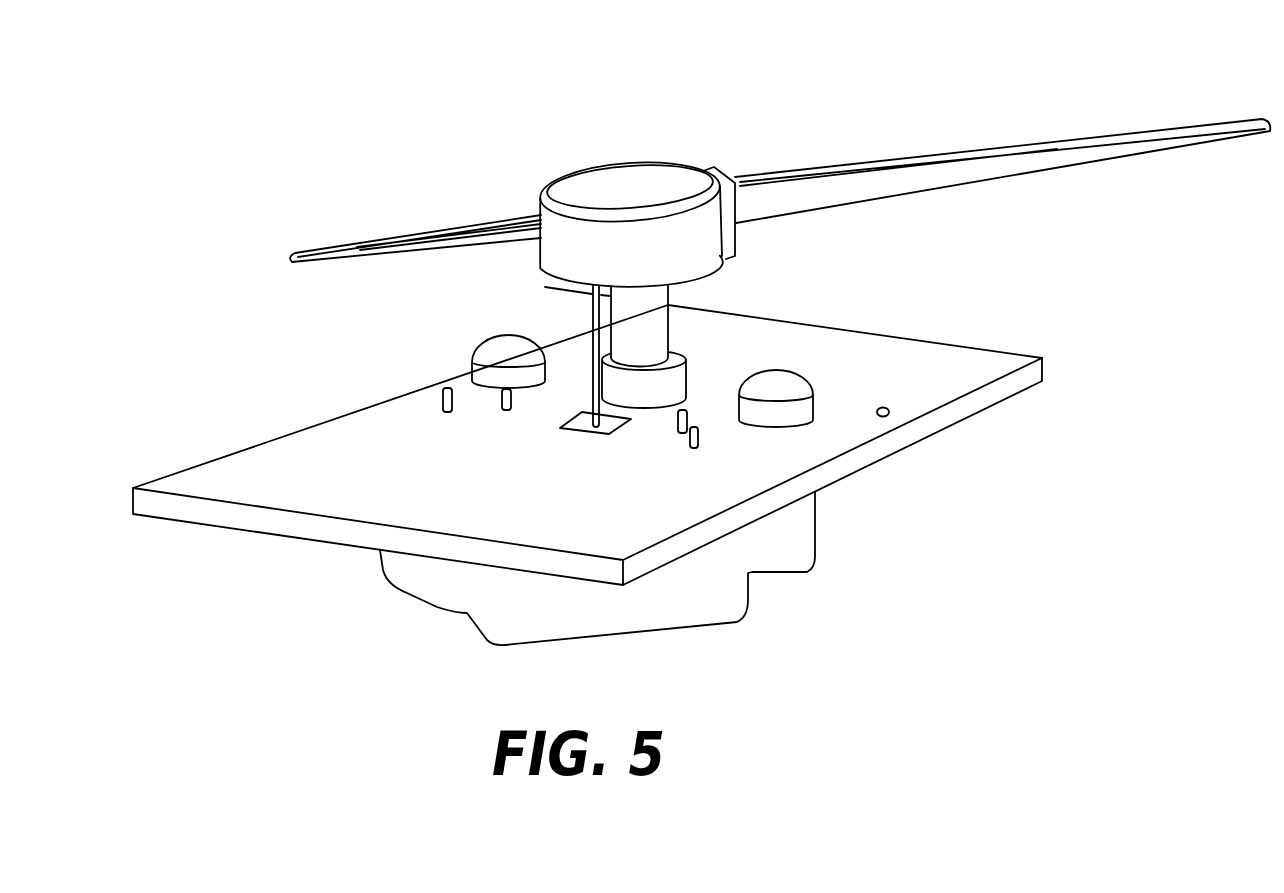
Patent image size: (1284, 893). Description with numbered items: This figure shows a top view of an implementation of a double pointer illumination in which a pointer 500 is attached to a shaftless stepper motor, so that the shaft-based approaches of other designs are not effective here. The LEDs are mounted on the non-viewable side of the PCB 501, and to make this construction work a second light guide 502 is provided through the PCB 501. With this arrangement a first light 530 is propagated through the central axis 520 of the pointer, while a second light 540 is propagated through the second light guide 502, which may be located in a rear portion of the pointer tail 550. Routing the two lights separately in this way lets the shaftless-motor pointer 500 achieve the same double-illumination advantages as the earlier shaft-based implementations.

The pointer 500 is at (644, 87).
The PCB 501 is at (962, 410).
The second light guide 502 is at (614, 428).
The central axis 520 is at (667, 311).
The first light 530 is at (860, 162).
The second light 540 is at (490, 220).
The pointer tail 550 is at (330, 248).